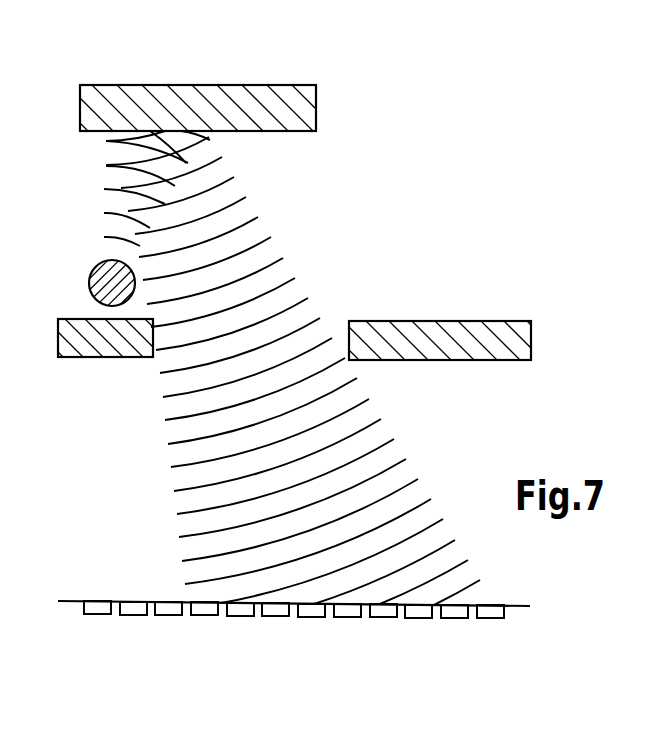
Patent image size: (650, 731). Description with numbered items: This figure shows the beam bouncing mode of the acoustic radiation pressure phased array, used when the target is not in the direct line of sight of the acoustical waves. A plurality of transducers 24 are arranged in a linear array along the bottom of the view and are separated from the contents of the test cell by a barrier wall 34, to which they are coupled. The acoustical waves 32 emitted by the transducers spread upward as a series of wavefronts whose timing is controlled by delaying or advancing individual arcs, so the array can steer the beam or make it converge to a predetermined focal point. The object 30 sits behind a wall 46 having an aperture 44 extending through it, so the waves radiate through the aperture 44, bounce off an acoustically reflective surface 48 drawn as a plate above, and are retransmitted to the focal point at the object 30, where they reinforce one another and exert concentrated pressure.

The reflector plate 48 is at (317, 90).
The aperture 44 is at (338, 327).
The wall 46 is at (462, 320).
The object 30 is at (88, 275).
The acoustical waves 32 is at (140, 381).
The barrier wall 34 is at (117, 602).
The transducers 24 is at (100, 615).